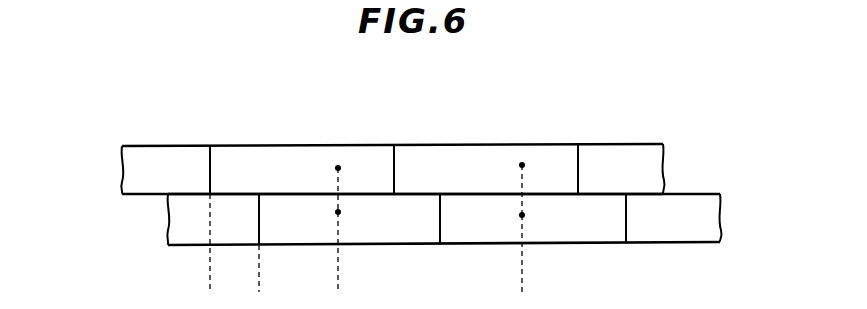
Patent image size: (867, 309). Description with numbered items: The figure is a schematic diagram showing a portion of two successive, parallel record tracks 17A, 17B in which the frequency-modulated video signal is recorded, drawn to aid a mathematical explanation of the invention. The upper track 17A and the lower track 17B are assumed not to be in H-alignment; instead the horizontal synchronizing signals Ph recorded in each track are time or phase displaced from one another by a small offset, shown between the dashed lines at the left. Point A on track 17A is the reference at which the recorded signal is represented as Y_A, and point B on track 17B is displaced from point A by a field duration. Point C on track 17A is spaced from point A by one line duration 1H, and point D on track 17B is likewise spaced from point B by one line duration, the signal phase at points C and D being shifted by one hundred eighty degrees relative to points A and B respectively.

The record track 17A is at (657, 163).
The record track 17B is at (715, 216).
The horizontal synchronizing signal Ph is at (211, 168).
The point A is at (337, 167).
The point B is at (338, 213).
The point C is at (522, 165).
The point D is at (522, 215).
The one line duration 1H is at (522, 280).